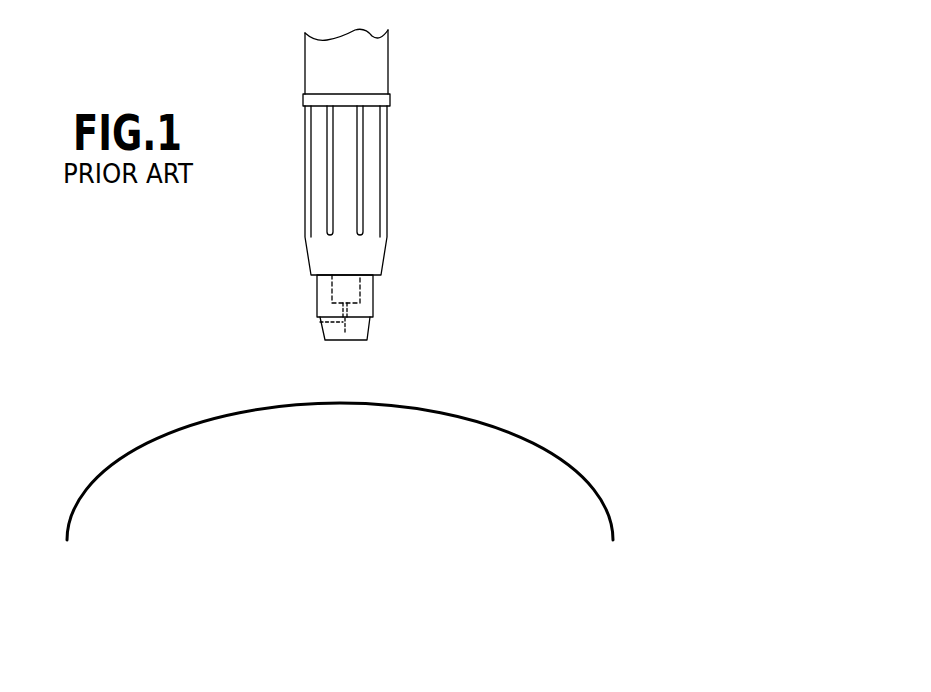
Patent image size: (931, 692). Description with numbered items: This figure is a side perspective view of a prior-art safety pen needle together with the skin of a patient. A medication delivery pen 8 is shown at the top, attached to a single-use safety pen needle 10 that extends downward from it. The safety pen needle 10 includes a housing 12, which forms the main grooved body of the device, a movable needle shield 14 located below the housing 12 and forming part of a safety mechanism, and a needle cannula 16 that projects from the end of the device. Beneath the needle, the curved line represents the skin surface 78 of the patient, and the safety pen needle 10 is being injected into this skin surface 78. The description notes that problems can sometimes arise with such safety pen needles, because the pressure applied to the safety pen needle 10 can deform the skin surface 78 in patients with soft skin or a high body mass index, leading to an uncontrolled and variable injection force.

The medication delivery pen 8 is at (388, 65).
The safety pen needle 10 is at (403, 130).
The housing 12 is at (306, 172).
The movable needle shield 14 is at (373, 297).
The needle cannula 16 is at (320, 322).
The skin surface 78 is at (497, 423).